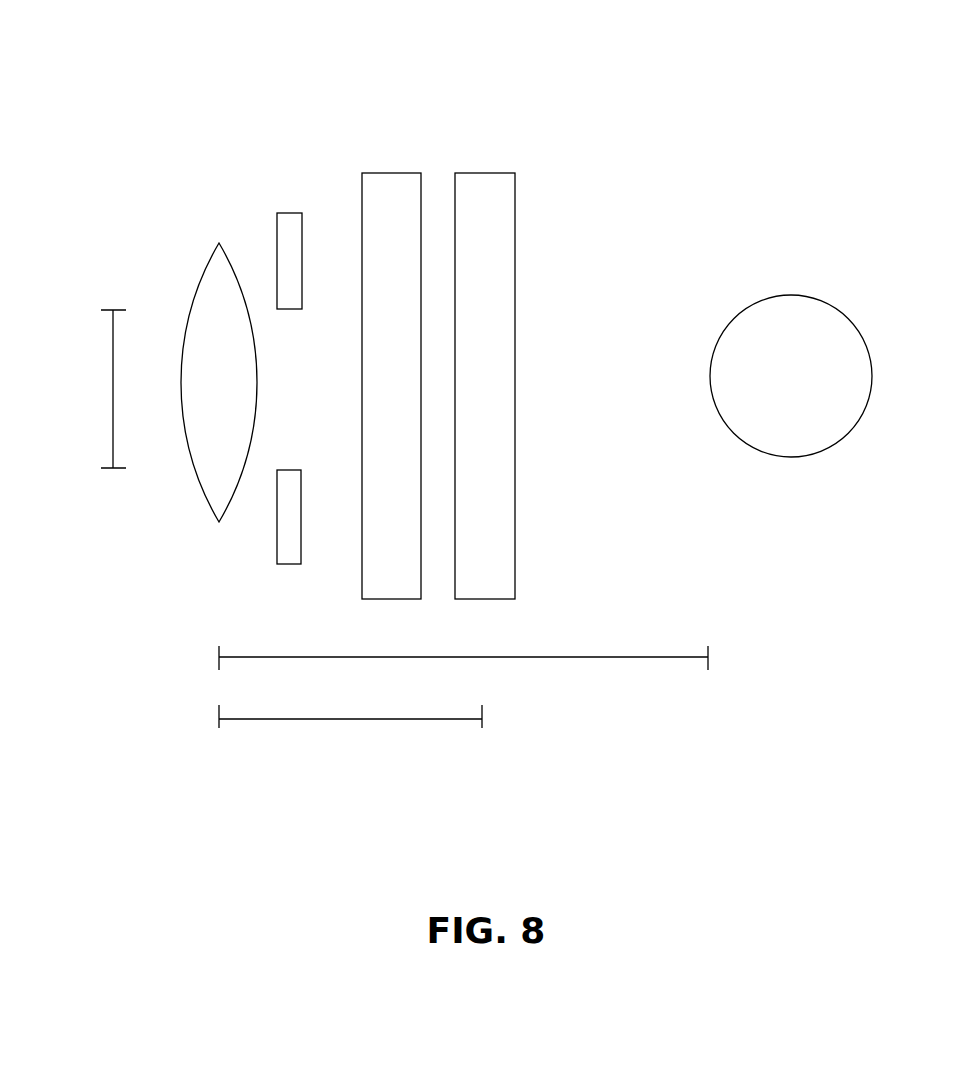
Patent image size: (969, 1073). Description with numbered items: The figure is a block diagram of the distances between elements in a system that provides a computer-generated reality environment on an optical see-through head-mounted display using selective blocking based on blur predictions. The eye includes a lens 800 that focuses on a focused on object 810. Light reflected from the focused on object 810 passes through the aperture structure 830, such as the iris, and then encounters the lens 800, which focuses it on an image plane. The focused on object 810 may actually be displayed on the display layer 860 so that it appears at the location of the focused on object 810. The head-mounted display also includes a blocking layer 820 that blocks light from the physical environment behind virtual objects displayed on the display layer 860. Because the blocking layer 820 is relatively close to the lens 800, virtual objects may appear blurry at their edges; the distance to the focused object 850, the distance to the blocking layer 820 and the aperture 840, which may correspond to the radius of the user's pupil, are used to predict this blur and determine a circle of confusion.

The lens 800 is at (219, 382).
The focused on object 810 is at (791, 376).
The blocking layer 820 is at (485, 172).
The aperture structure 830 is at (293, 213).
The aperture 840 is at (112, 443).
The distance to the focused object 850 is at (600, 657).
The display layer 860 is at (477, 738).